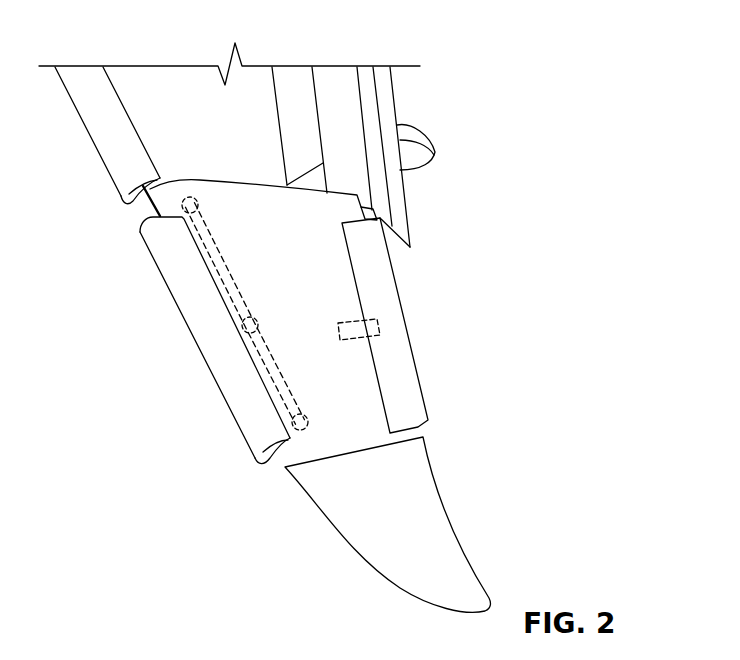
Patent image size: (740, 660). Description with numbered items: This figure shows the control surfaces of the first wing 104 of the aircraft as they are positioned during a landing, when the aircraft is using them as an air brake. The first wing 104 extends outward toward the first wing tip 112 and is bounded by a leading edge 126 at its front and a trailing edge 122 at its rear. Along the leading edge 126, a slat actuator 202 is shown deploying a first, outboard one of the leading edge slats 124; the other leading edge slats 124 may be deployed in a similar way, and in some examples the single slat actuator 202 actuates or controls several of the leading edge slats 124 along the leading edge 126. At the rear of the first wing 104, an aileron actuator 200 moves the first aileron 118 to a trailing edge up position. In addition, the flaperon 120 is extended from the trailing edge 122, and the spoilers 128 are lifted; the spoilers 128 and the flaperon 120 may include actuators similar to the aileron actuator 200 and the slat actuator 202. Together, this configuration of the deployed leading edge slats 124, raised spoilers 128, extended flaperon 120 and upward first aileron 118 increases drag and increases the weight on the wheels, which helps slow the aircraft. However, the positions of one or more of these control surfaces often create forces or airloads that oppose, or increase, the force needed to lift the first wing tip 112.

The first wing 104 is at (163, 78).
The spoilers 128 is at (288, 77).
The flaperon 120 is at (348, 118).
The trailing edge 122 is at (368, 207).
The leading edge 126 is at (148, 203).
The leading edge slats 124 is at (255, 423).
The slat actuator 202 is at (203, 269).
The aileron actuator 200 is at (383, 318).
The first aileron 118 is at (405, 368).
The first wing tip 112 is at (393, 570).